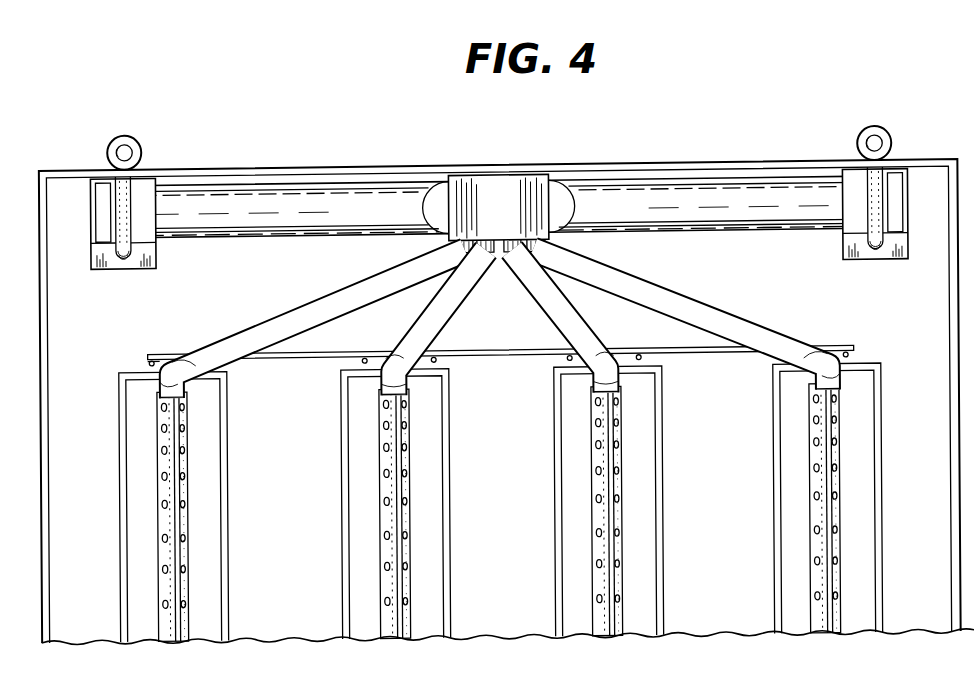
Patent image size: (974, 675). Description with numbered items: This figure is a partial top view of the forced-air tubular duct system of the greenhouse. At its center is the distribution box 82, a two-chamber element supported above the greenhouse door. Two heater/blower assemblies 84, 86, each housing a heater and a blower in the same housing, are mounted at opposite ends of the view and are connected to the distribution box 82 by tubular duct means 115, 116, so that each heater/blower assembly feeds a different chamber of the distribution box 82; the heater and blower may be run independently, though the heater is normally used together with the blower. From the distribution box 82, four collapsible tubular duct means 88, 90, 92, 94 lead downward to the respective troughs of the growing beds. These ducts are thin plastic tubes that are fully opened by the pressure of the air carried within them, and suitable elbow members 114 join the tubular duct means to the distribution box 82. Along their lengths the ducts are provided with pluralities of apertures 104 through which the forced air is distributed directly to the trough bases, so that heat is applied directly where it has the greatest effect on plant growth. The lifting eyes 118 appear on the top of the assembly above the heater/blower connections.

The distribution box 82 is at (512, 190).
The heater/blower assembly 84 is at (103, 223).
The heater/blower assembly 86 is at (897, 223).
The collapsible tubular duct means 88 is at (828, 548).
The collapsible tubular duct means 90 is at (620, 550).
The collapsible tubular duct means 92 is at (398, 552).
The collapsible tubular duct means 94 is at (177, 557).
The apertures 104 is at (183, 473).
The elbow members 114 is at (405, 383).
The tubular duct means 115 is at (224, 222).
The tubular duct means 116 is at (749, 226).
The lifting eye 118 is at (137, 136).